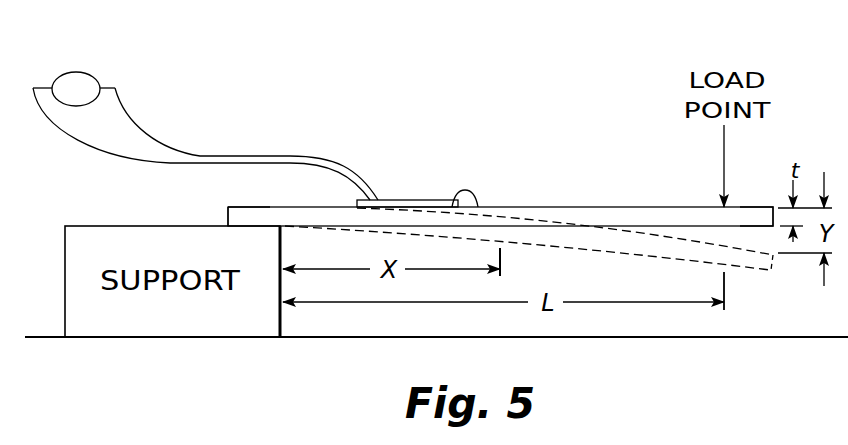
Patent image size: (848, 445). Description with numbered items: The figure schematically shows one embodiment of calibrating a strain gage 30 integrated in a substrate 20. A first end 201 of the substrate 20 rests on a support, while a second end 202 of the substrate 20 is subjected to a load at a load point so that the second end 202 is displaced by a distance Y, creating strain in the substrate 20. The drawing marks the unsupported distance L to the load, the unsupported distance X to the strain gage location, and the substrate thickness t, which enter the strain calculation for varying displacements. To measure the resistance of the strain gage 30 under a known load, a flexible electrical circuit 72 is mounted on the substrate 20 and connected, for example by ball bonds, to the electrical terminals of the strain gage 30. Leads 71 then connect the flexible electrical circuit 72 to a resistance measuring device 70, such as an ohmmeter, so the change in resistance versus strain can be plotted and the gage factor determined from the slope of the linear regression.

The substrate 20 is at (560, 212).
The first end 201 is at (244, 212).
The second end 202 is at (753, 212).
The strain gage 30 is at (500, 207).
The resistance measuring device 70 is at (92, 59).
The leads 71 is at (170, 163).
The flexible electrical circuit 72 is at (399, 199).